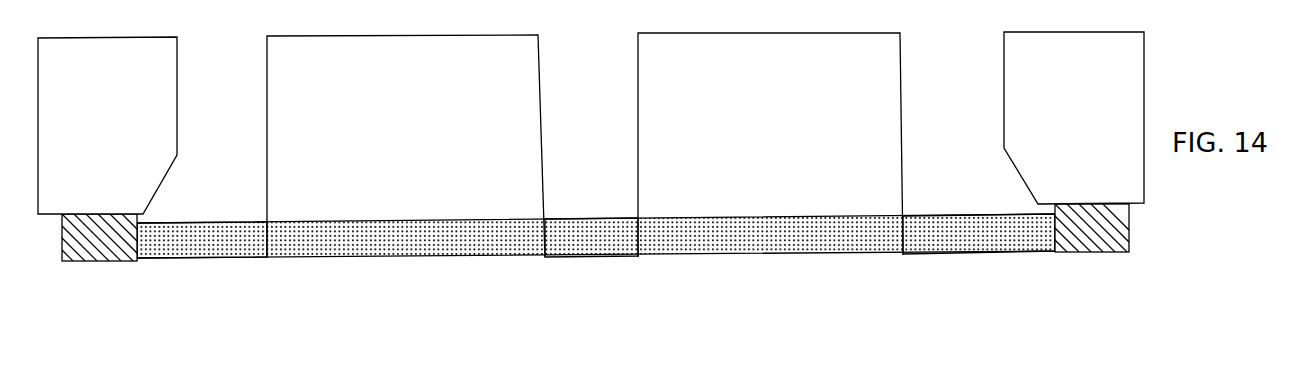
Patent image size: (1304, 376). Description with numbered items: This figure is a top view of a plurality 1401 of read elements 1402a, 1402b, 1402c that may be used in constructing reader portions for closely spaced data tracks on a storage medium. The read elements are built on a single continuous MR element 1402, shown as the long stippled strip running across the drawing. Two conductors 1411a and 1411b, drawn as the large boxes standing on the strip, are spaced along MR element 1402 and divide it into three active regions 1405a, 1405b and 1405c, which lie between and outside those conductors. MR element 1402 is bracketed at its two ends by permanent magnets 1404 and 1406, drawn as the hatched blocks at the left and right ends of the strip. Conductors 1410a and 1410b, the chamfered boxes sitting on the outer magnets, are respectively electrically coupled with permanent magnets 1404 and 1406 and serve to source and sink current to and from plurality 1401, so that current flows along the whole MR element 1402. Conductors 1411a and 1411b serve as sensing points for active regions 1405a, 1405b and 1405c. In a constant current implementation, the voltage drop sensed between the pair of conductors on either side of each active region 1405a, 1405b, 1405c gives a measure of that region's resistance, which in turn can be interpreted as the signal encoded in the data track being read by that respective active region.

The plurality of read elements 1401 is at (207, 127).
The MR element 1402 is at (158, 262).
The read element 1402a is at (252, 198).
The read element 1402b is at (621, 173).
The read element 1402c is at (989, 170).
The permanent magnet 1404 is at (95, 263).
The active region 1405a is at (238, 261).
The active region 1405b is at (592, 256).
The active region 1405c is at (948, 252).
The permanent magnet 1406 is at (1090, 253).
The conductor 1410a is at (107, 125).
The conductor 1410b is at (1074, 118).
The conductor 1411a is at (406, 146).
The conductor 1411b is at (770, 145).